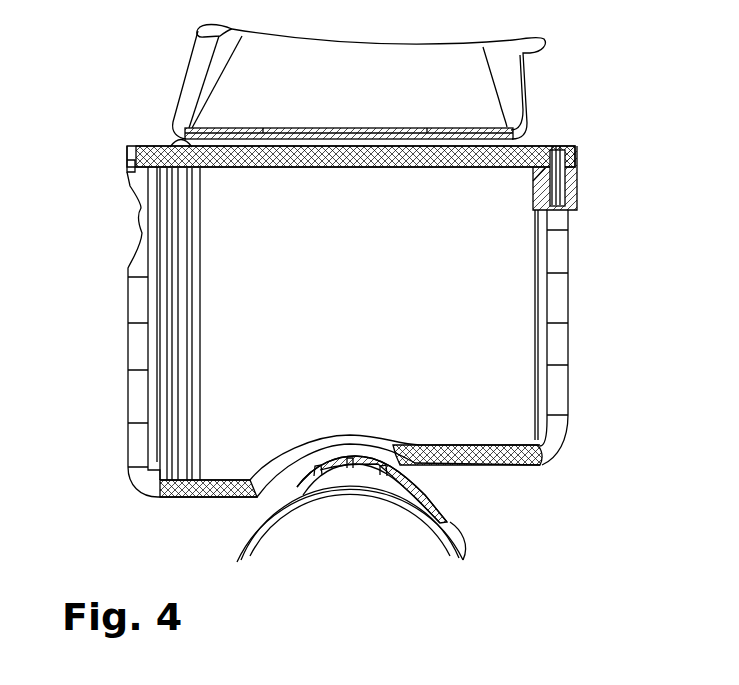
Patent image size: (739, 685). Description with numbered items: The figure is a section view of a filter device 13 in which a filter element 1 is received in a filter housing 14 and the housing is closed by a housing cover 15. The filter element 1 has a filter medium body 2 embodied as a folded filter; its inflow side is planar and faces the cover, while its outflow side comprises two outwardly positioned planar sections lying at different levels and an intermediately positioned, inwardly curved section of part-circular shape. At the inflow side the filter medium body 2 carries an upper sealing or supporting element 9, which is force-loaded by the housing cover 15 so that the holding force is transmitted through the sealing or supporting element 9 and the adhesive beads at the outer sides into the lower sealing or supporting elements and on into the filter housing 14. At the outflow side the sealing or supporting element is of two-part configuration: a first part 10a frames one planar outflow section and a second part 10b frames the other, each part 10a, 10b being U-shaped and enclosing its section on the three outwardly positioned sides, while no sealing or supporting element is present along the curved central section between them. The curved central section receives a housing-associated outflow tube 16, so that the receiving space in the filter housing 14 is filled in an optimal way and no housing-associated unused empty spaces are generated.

The filter device 13 is at (121, 105).
The housing cover 15 is at (187, 72).
The upper sealing or supporting element 9 is at (553, 154).
The filter medium body 2 is at (511, 294).
The filter element 1 is at (516, 343).
The filter housing 14 is at (128, 366).
The first part of lower sealing or supporting element 10a is at (207, 496).
The second part of lower sealing or supporting element 10b is at (510, 462).
The outflow tube 16 is at (445, 521).